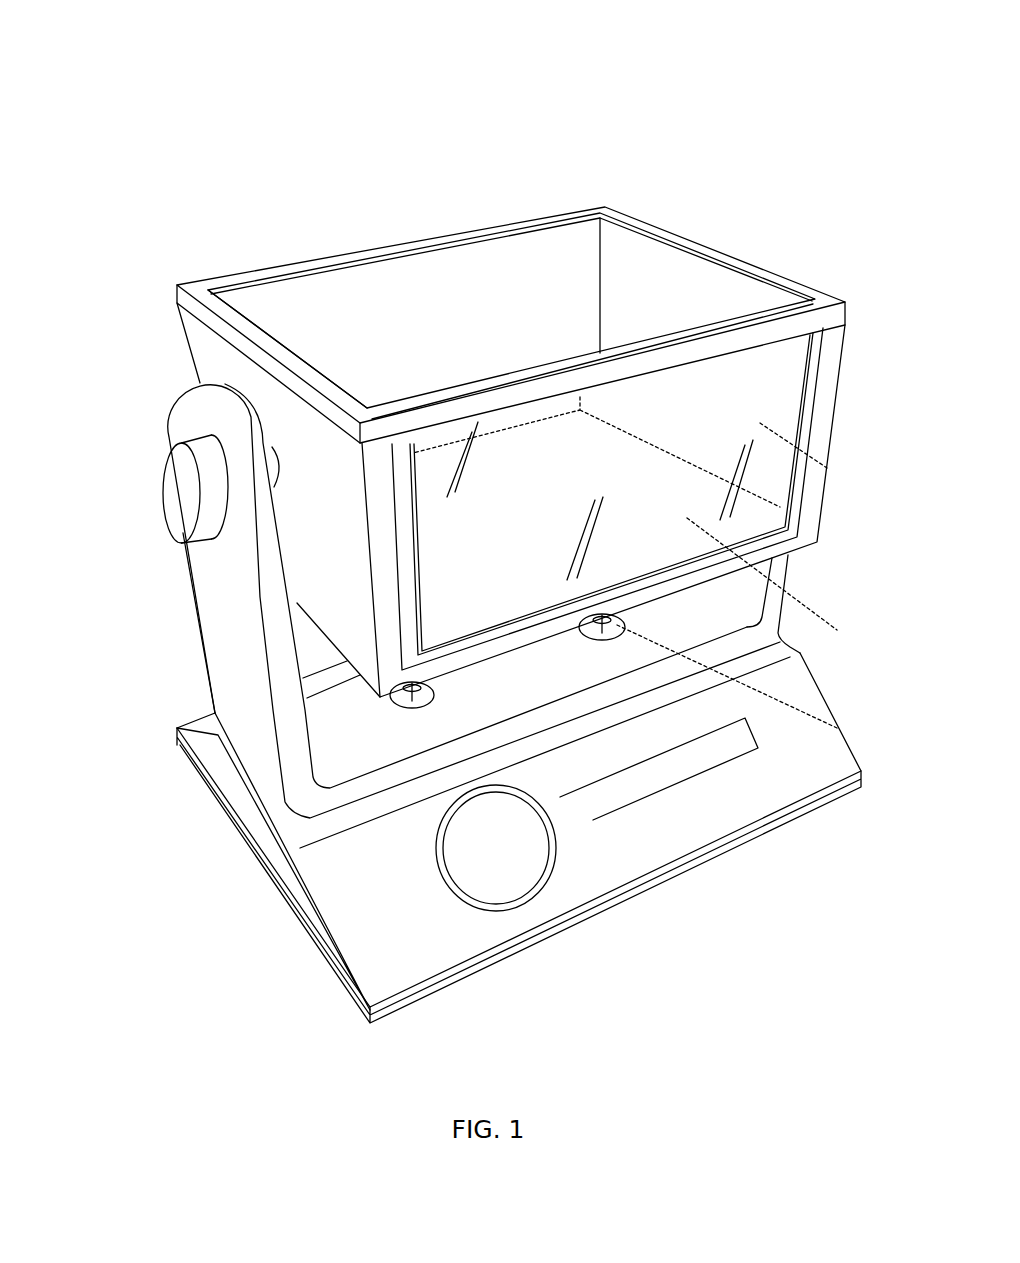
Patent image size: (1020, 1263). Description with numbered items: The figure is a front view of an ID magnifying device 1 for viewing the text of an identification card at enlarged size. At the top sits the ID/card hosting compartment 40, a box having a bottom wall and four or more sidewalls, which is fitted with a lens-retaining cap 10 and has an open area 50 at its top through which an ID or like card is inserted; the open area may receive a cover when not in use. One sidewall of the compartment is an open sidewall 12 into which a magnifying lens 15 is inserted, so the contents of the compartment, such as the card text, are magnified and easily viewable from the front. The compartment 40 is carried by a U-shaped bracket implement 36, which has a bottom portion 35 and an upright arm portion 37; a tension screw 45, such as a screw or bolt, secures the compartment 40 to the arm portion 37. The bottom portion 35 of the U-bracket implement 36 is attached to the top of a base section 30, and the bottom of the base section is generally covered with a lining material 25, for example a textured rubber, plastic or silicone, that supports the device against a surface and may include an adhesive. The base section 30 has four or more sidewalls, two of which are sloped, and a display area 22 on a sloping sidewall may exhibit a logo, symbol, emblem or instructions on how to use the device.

The ID magnifying device 1 is at (807, 95).
The lens-retaining cap 10 is at (813, 287).
The open sidewall 12 is at (828, 476).
The magnifying lens 15 is at (833, 628).
The display area 22 is at (677, 787).
The lining material 25 is at (591, 929).
The base section 30 is at (280, 860).
The bottom portion 35 is at (373, 787).
The U-shaped bracket implement 36 is at (273, 768).
The arm portion 37 is at (230, 660).
The ID/card hosting compartment 40 is at (333, 617).
The tension screw 45 is at (187, 497).
The open area 50 is at (402, 278).